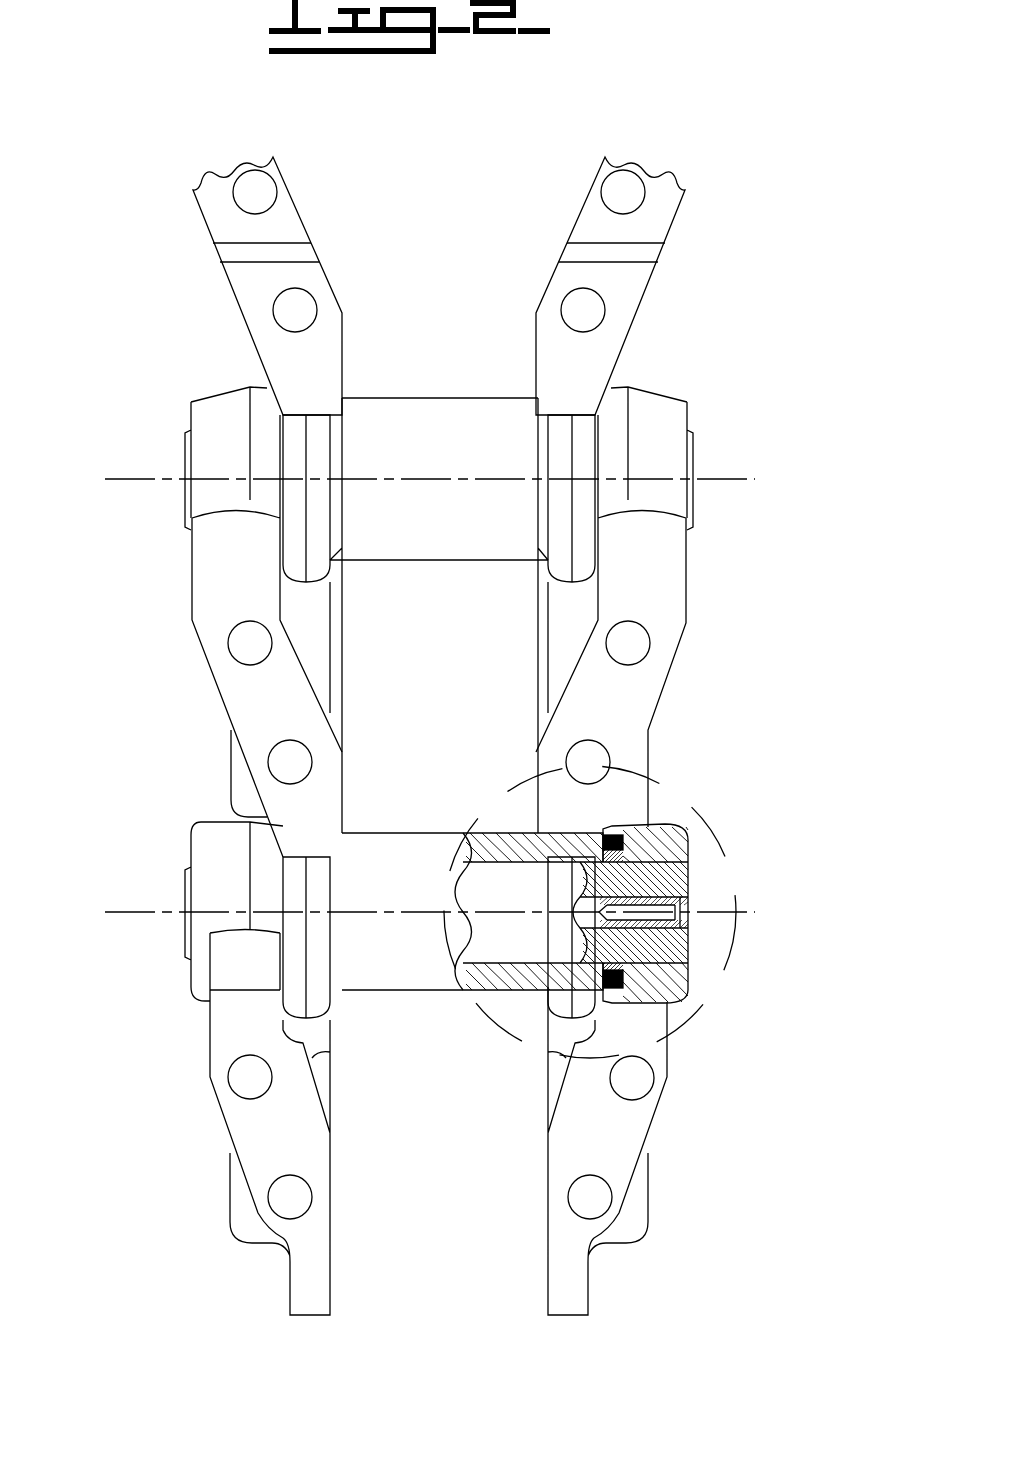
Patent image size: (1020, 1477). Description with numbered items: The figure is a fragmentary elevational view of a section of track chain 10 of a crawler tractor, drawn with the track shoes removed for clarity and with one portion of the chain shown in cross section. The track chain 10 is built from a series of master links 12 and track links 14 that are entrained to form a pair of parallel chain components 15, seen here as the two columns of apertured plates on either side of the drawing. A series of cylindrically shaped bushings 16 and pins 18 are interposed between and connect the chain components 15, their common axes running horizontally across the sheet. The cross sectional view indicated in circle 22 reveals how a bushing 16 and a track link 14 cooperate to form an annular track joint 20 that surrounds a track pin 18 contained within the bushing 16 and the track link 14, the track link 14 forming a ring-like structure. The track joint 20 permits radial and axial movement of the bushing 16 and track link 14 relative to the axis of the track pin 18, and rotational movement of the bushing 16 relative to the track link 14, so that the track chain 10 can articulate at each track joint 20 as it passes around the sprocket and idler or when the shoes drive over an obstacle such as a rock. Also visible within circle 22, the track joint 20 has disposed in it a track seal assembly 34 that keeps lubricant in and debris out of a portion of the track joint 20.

The track chain 10 is at (458, 212).
The master link 12 is at (212, 233).
The track link 14 is at (616, 840).
The chain component 15 is at (226, 154).
The bushing 16 is at (445, 398).
The pin 18 is at (692, 454).
The track joint 20 is at (640, 991).
The circle 22 is at (742, 950).
The track seal assembly 34 is at (567, 987).